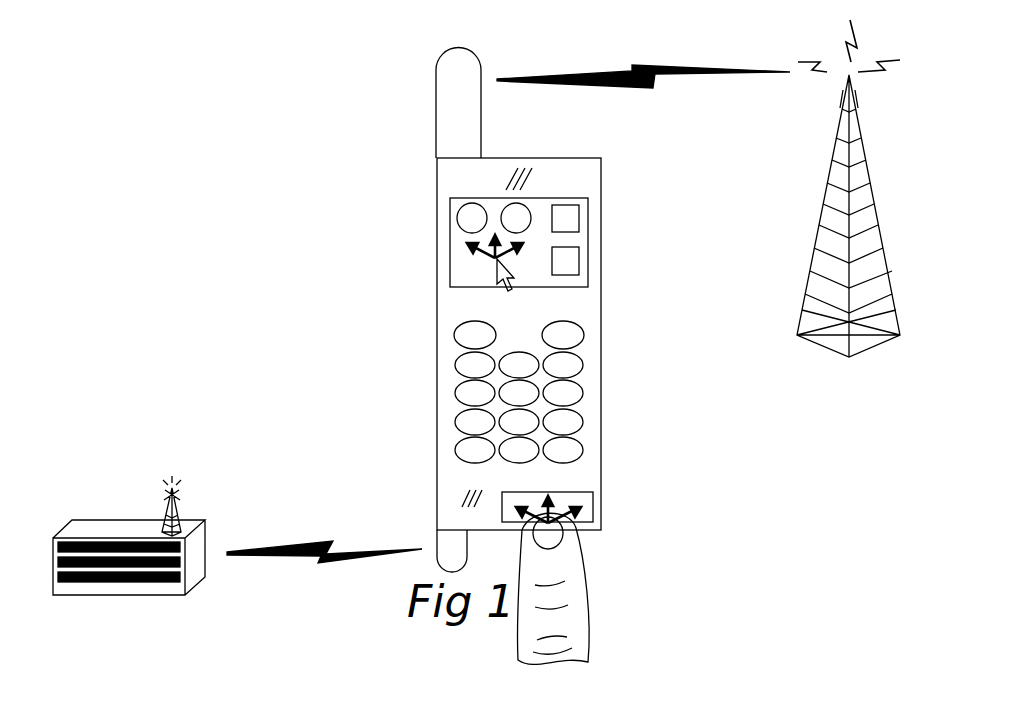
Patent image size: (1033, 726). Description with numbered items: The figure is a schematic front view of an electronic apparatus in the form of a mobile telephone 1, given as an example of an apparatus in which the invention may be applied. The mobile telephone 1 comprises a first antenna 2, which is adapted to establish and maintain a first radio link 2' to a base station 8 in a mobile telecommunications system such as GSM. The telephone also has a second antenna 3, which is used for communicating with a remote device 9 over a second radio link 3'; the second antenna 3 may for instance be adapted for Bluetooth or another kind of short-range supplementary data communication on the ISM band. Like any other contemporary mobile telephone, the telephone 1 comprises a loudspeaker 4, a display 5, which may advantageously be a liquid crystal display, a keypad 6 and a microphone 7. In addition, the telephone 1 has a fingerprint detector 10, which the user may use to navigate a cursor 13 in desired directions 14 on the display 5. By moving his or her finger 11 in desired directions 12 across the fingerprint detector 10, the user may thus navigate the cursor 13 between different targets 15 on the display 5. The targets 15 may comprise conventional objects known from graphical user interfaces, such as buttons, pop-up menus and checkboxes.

The mobile telephone 1 is at (588, 180).
The first antenna 2 is at (426, 103).
The first radio link 2' is at (643, 56).
The second antenna 3 is at (425, 546).
The second radio link 3' is at (324, 522).
The loudspeaker 4 is at (507, 183).
The display 5 is at (452, 280).
The keypad 6 is at (465, 366).
The microphone 7 is at (458, 496).
The base station 8 is at (820, 227).
The remote device 9 is at (202, 530).
The fingerprint detector 10 is at (580, 508).
The finger 11 is at (567, 574).
The desired directions 12 is at (590, 517).
The cursor 13 is at (497, 282).
The desired directions 14 is at (468, 258).
The targets 15 is at (579, 227).